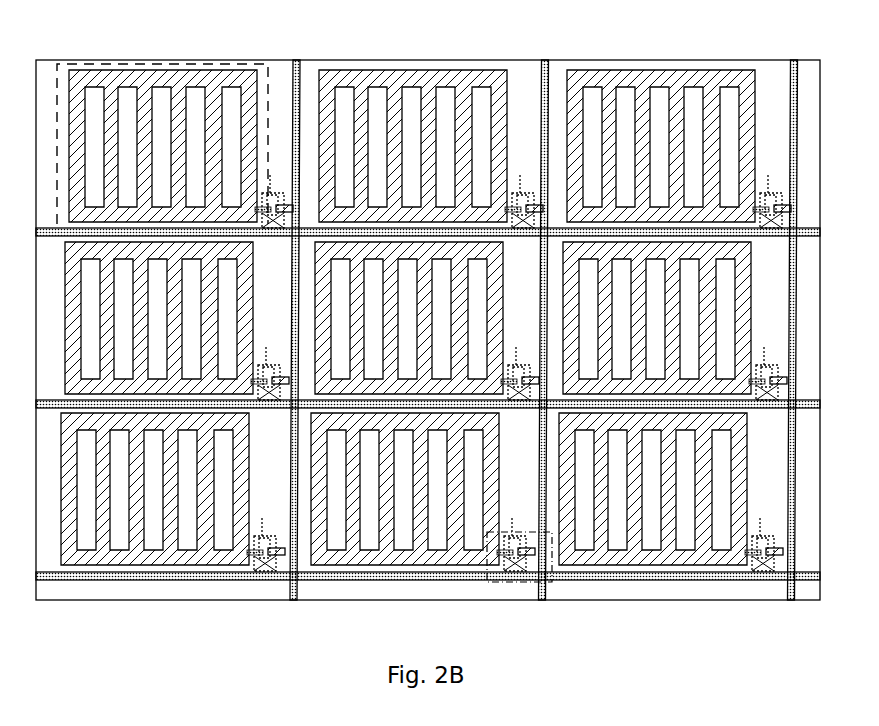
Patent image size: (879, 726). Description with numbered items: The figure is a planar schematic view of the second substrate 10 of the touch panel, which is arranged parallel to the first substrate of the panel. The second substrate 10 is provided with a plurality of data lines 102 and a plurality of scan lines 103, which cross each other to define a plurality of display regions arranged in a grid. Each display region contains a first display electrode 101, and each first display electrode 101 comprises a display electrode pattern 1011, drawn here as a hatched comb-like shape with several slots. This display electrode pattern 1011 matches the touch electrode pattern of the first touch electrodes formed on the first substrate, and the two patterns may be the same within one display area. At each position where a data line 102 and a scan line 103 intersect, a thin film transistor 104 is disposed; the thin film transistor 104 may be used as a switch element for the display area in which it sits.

The second substrate 10 is at (638, 60).
The first display electrode 101 is at (392, 88).
The display electrode pattern 1011 is at (163, 65).
The data line 102 is at (293, 60).
The scan line 103 is at (223, 577).
The thin film transistor 104 is at (500, 582).